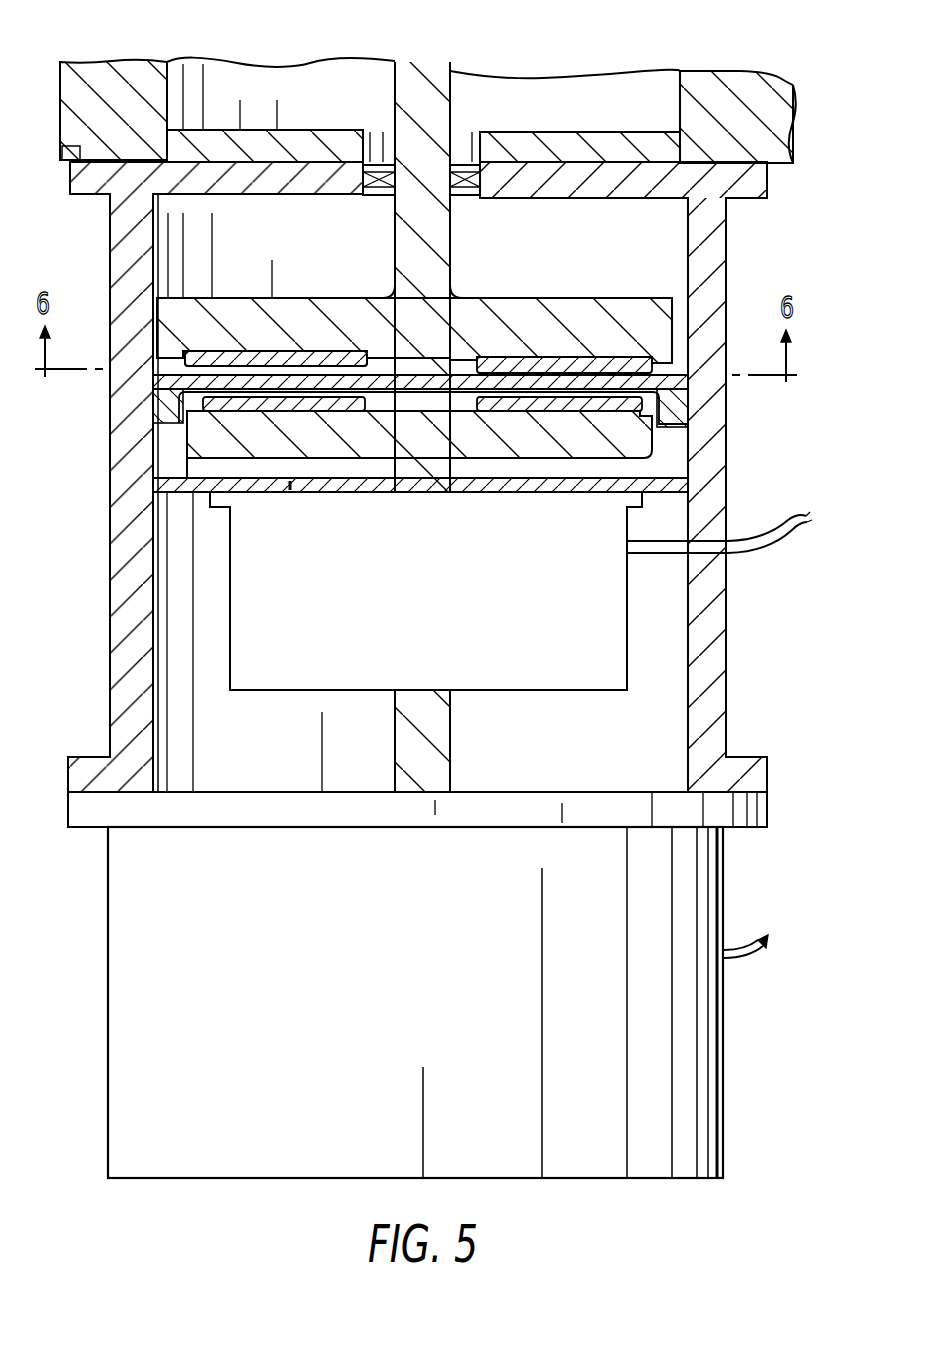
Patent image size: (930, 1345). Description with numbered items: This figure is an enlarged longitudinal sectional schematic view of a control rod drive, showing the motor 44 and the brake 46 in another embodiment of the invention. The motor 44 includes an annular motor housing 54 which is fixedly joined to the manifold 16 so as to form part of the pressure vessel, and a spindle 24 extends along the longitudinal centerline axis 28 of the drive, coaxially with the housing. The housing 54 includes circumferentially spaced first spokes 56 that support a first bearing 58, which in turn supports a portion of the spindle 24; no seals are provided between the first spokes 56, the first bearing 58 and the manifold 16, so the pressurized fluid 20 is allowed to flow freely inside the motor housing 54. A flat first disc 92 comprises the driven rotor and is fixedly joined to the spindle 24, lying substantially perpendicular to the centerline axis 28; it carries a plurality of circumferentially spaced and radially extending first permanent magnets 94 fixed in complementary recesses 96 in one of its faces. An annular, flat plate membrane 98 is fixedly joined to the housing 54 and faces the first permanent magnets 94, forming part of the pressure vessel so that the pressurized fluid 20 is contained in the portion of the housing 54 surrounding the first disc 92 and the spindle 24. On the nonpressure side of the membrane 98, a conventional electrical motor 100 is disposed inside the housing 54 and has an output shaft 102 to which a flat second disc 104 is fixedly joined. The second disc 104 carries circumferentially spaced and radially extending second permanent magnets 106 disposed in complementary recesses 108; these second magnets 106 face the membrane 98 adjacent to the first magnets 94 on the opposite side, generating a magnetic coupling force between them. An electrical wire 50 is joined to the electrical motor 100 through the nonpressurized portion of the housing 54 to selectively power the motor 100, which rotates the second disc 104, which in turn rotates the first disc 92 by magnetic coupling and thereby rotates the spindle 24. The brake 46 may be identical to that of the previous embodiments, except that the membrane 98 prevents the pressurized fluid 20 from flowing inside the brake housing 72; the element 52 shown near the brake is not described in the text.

The manifold 16 is at (147, 62).
The pressurized fluid 20 is at (218, 87).
The spindle 24 is at (453, 100).
The longitudinal centerline axis 28 is at (425, 300).
The motor 44 is at (106, 517).
The brake 46 is at (98, 1001).
The electrical wire 50 is at (762, 547).
The connector 52 is at (727, 933).
The motor housing 54 is at (728, 260).
The first spokes 56 is at (570, 200).
The first bearing 58 is at (468, 200).
The brake housing 72 is at (727, 892).
The first disc 92 is at (557, 298).
The first permanent magnets 94 is at (483, 356).
The recesses 96 is at (203, 347).
The membrane 98 is at (152, 375).
The electrical motor 100 is at (228, 668).
The output shaft 102 is at (378, 465).
The second disc 104 is at (660, 440).
The second permanent magnets 106 is at (533, 398).
The recesses 108 is at (585, 405).